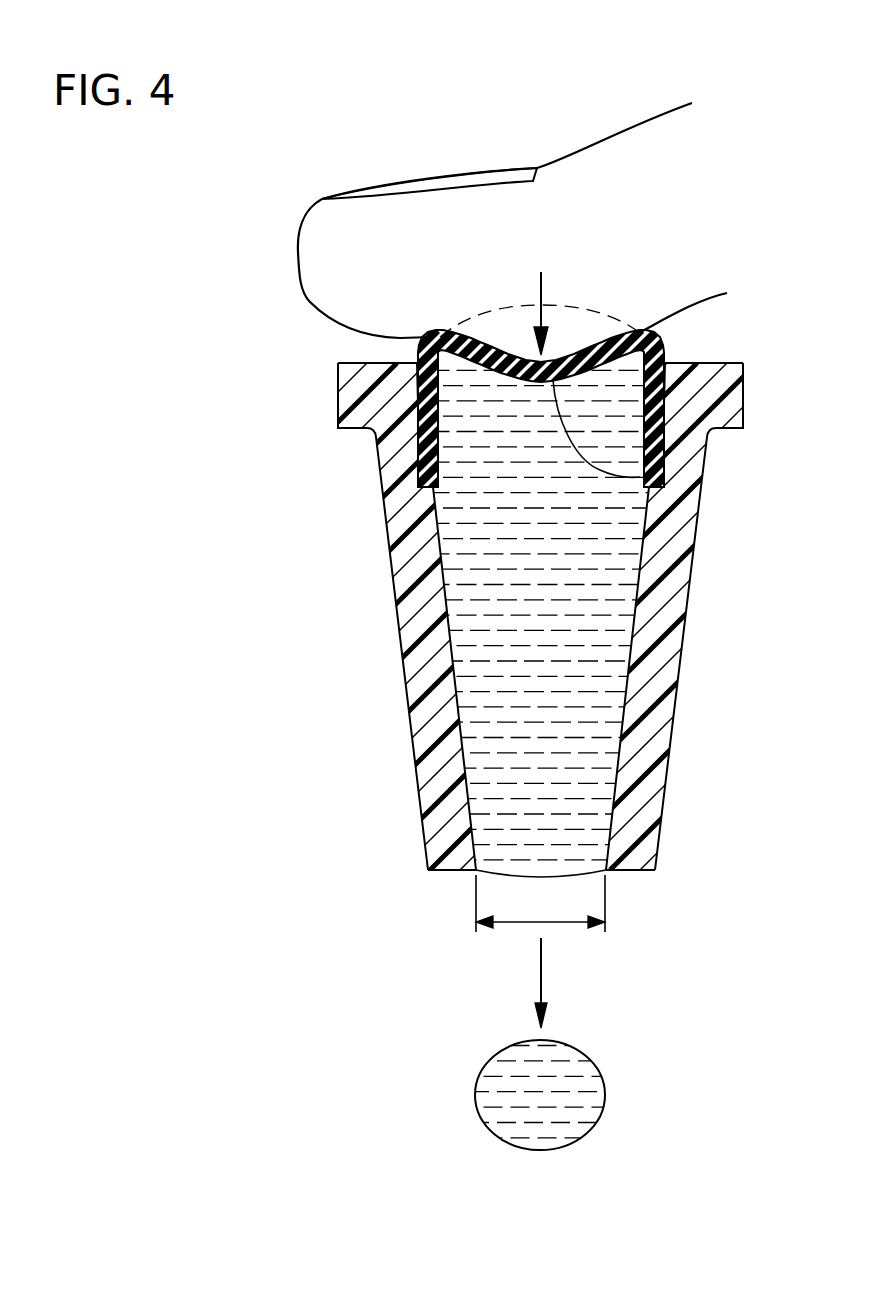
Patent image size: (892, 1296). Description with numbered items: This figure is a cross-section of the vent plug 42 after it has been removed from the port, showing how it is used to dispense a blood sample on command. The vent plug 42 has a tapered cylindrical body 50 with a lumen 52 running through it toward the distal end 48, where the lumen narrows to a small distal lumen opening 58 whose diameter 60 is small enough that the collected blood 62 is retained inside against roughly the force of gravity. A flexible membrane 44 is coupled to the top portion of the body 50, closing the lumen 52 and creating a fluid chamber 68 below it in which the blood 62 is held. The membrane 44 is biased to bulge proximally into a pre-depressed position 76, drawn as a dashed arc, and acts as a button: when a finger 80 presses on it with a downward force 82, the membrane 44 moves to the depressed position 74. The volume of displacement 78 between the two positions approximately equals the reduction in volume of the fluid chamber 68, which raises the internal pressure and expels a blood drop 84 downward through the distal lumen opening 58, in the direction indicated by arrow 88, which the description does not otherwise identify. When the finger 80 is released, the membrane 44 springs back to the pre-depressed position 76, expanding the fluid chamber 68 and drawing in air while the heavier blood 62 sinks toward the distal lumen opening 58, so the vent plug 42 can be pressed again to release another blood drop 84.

The vent plug 42 is at (680, 575).
The membrane 44 is at (420, 343).
The distal end 48 is at (456, 873).
The body 50 is at (667, 673).
The lumen 52 is at (457, 542).
The distal lumen opening 58 is at (563, 877).
The diameter 60 is at (557, 925).
The blood 62 is at (487, 760).
The fluid chamber 68 is at (487, 633).
The depressed position 74 is at (650, 478).
The pre-depressed position 76 is at (553, 303).
The volume of displacement 78 is at (580, 337).
The finger 80 is at (614, 135).
The downward force 82 is at (538, 287).
The blood drop 84 is at (580, 1100).
The dispensing direction 88 is at (535, 980).